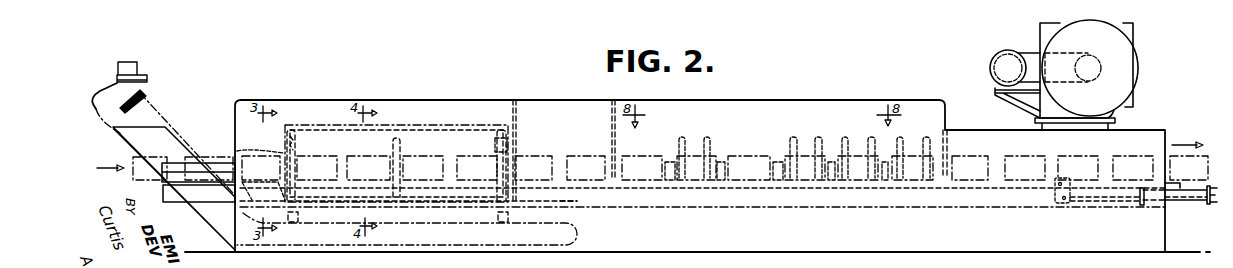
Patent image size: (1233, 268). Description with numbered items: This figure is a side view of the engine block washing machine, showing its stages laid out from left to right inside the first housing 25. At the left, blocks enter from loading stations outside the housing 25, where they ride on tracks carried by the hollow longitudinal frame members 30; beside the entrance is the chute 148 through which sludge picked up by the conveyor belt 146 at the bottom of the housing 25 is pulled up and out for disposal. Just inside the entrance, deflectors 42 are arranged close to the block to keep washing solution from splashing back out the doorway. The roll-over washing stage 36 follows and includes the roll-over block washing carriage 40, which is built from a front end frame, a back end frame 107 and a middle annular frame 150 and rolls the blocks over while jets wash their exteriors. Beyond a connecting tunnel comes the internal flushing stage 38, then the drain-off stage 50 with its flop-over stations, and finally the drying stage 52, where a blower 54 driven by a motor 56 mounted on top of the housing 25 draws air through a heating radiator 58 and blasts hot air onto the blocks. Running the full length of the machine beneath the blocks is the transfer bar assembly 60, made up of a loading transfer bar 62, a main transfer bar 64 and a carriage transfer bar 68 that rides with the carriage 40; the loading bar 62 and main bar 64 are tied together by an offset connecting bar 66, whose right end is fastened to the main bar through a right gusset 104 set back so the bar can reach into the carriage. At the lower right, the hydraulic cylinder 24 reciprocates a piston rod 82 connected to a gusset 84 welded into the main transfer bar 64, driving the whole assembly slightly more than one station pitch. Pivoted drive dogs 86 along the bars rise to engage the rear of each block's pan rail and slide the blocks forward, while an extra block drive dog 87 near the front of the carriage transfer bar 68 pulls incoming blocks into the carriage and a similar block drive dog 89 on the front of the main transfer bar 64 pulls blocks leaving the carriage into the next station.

The hydraulic cylinder 24 is at (1182, 202).
The first housing 25 is at (297, 100).
The longitudinal frame members 30 is at (175, 199).
The roll-over washing stage 36 is at (474, 94).
The internal flushing stage 38 is at (756, 89).
The roll-over block washing carriage 40 is at (425, 119).
The deflectors 42 is at (261, 165).
The drain-off stage 50 is at (863, 94).
The drying stage 52 is at (1045, 65).
The blower 54 is at (1095, 25).
The motor 56 is at (990, 57).
The heating radiator 58 is at (1043, 29).
The transfer bar assembly 60 is at (646, 193).
The loading transfer bar 62 is at (261, 168).
The main transfer bar 64 is at (836, 198).
The offset connecting bar 66 is at (438, 204).
The carriage transfer bar 68 is at (416, 194).
The piston rod 82 is at (1093, 200).
The gusset 84 is at (1055, 198).
The drive dogs 86 is at (341, 172).
The block drive dog 87 is at (333, 176).
The block drive dog 89 is at (548, 174).
The right gusset 104 is at (578, 200).
The back end frame 107 is at (493, 148).
The conveyor belt 146 is at (493, 248).
The chute 148 is at (170, 130).
The middle annular frame 150 is at (398, 146).